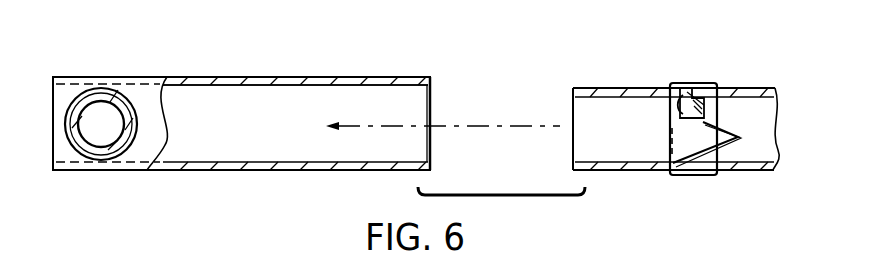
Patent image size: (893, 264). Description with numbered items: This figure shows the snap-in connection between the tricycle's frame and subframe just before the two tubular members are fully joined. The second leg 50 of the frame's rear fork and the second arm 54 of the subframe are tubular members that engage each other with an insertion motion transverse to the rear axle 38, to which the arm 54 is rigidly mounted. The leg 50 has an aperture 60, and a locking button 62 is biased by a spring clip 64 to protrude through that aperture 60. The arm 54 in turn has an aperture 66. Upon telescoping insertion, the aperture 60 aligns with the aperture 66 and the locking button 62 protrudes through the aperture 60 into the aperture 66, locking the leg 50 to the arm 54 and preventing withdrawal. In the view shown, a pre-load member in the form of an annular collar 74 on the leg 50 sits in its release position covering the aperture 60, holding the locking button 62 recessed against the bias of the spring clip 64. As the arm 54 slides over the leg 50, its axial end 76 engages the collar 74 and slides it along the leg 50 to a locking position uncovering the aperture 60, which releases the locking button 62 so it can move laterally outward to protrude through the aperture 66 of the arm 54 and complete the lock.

The rear axle 38 is at (76, 150).
The second leg 50 is at (597, 88).
The second arm 54 is at (233, 77).
The aperture 60 is at (675, 126).
The locking button 62 is at (740, 89).
The spring clip 64 is at (728, 122).
The aperture 66 is at (315, 86).
The annular collar 74 is at (697, 84).
The axial end 76 is at (432, 77).